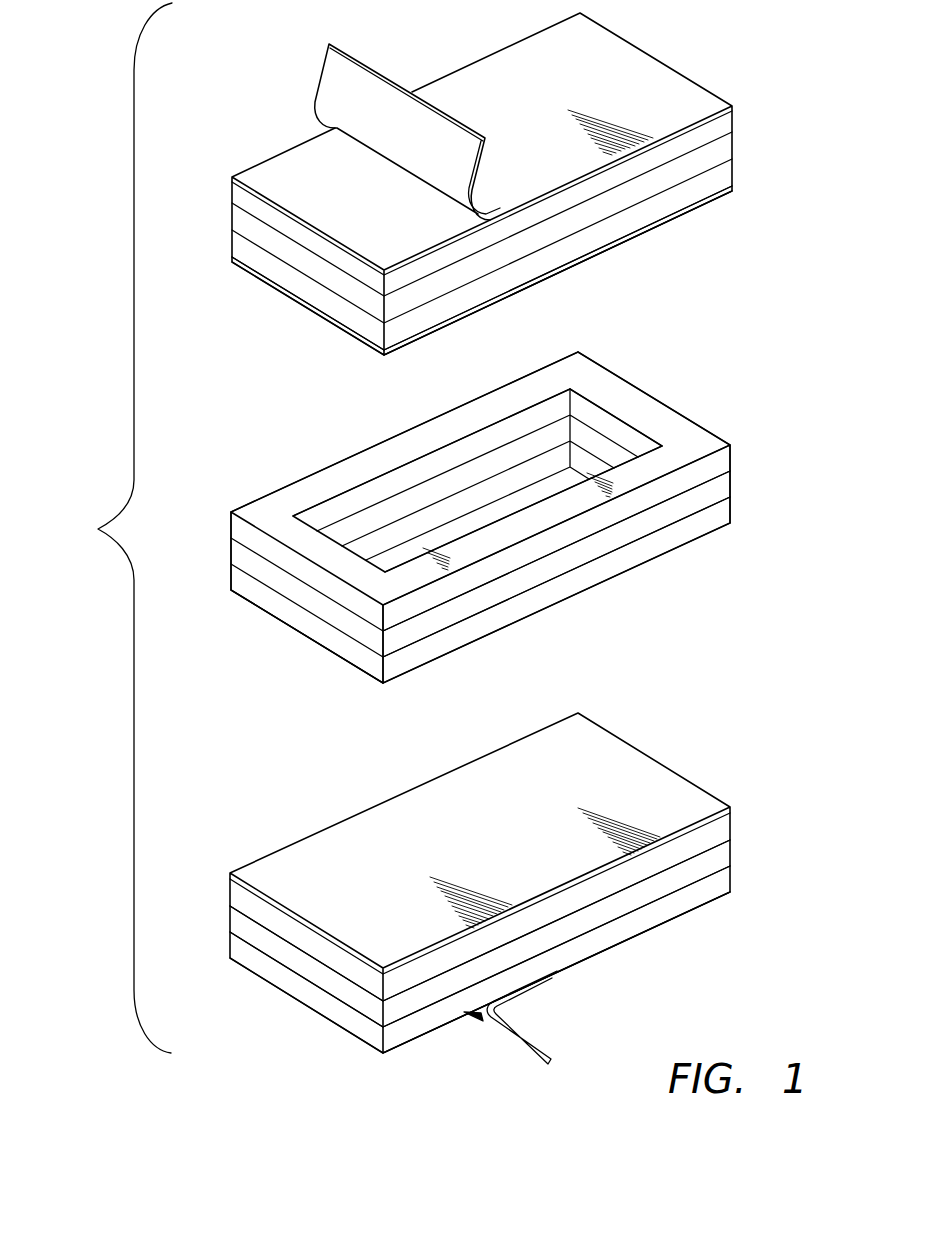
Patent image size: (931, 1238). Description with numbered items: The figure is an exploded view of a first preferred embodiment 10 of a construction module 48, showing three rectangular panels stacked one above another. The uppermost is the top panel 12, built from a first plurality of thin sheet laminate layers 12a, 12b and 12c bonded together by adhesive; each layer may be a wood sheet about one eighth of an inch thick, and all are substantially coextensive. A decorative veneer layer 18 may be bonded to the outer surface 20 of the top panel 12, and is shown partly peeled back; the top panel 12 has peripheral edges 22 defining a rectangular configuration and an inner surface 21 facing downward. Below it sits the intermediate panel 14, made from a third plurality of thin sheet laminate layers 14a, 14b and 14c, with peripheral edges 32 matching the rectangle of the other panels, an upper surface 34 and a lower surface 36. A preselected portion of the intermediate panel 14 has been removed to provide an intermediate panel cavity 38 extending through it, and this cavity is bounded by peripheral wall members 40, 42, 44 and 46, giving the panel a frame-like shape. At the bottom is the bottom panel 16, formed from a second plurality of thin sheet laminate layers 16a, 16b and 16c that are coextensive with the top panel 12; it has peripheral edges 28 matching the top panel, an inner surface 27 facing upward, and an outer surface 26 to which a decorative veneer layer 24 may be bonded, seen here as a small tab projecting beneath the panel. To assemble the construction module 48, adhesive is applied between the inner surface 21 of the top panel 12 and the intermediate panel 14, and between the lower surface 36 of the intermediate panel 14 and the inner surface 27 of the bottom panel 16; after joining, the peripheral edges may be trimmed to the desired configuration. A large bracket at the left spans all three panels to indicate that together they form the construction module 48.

The first preferred embodiment 10 is at (747, 380).
The top panel 12 is at (502, 195).
The thin sheet laminate layer 12a is at (728, 125).
The thin sheet laminate layer 12b is at (728, 152).
The thin sheet laminate layer 12c is at (728, 178).
The intermediate panel 14 is at (474, 535).
The thin sheet laminate layer 14a is at (242, 537).
The thin sheet laminate layer 14b is at (257, 568).
The thin sheet laminate layer 14c is at (265, 603).
The bottom panel 16 is at (469, 893).
The thin sheet laminate layer 16a is at (240, 898).
The thin sheet laminate layer 16b is at (297, 965).
The thin sheet laminate layer 16c is at (347, 1015).
The decorative veneer layer 18 is at (343, 50).
The outer surface 20 is at (283, 163).
The inner surface 21 is at (432, 332).
The peripheral edges 22 is at (515, 48).
The decorative veneer layer 24 is at (538, 1053).
The outer surface 26 is at (413, 1037).
The inner surface 27 is at (357, 872).
The peripheral edges 28 is at (228, 922).
The peripheral edges 32 is at (722, 468).
The upper surface 34 is at (650, 525).
The lower surface 36 is at (570, 580).
The intermediate panel cavity 38 is at (447, 532).
The peripheral wall member 40 is at (465, 548).
The peripheral wall member 42 is at (328, 550).
The peripheral wall member 44 is at (347, 473).
The peripheral wall member 46 is at (617, 393).
The construction module 48 is at (92, 530).